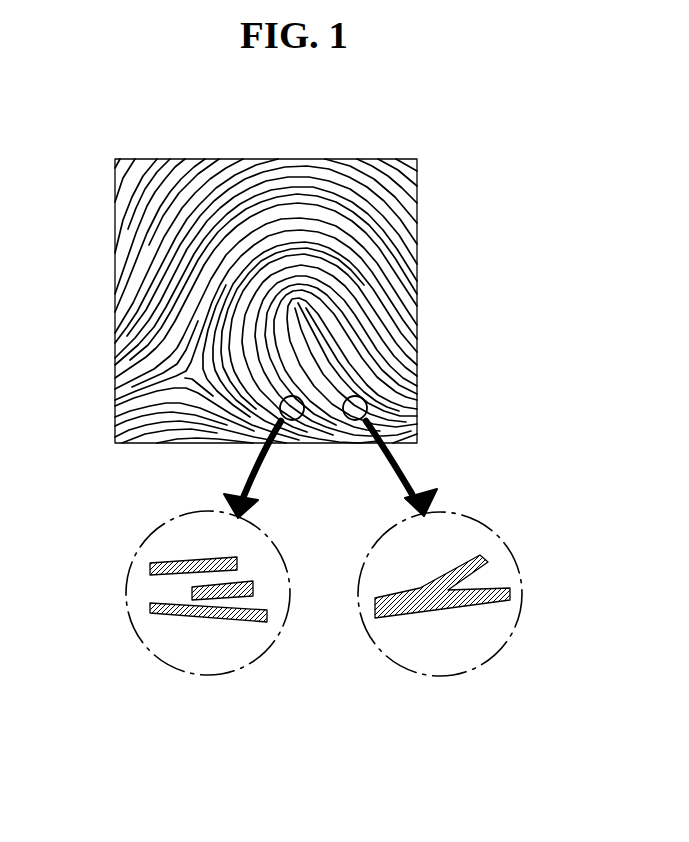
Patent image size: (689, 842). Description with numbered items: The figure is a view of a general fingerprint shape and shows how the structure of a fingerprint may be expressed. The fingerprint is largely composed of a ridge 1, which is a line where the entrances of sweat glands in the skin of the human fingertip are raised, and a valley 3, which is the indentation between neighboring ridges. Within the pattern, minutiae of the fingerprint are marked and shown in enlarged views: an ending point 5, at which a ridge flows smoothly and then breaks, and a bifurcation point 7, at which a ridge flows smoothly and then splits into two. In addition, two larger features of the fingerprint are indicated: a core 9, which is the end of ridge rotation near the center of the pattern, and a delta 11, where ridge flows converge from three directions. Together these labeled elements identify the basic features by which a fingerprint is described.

The ridge 1 is at (150, 283).
The valley 3 is at (360, 372).
The ending point 5 is at (136, 508).
The bifurcation point 7 is at (482, 521).
The core 9 is at (301, 321).
The delta 11 is at (187, 376).